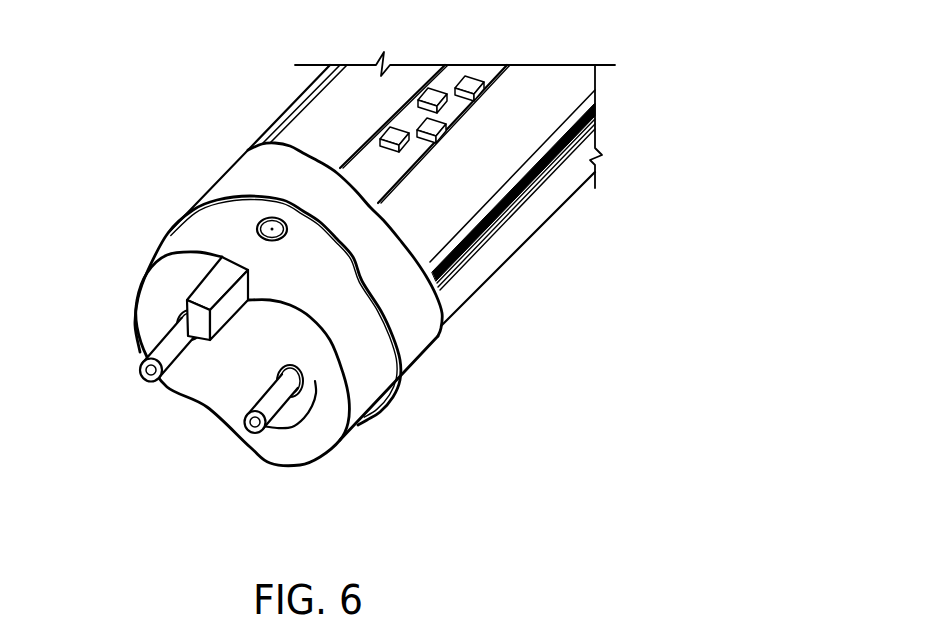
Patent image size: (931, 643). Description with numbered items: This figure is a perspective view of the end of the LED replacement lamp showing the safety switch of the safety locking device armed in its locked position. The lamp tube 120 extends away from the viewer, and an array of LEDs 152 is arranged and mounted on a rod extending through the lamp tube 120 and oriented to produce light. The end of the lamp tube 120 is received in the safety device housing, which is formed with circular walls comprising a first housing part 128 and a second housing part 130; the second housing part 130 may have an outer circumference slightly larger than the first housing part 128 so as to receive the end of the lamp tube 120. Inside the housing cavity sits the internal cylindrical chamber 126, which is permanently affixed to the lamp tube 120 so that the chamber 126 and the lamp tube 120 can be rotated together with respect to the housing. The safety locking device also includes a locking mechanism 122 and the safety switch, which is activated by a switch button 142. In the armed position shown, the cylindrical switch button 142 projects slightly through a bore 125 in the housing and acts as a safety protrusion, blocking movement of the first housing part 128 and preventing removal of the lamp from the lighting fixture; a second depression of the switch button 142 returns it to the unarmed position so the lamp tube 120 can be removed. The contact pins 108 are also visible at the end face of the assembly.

The pins 108 is at (146, 366).
The lamp tube 120 is at (500, 250).
The locking mechanism 122 is at (207, 297).
The bore 125 is at (257, 228).
The internal cylindrical chamber 126 is at (222, 375).
The first housing part 128 is at (360, 397).
The second housing part 130 is at (418, 350).
The switch button 142 is at (271, 218).
The LEDs 152 is at (432, 93).